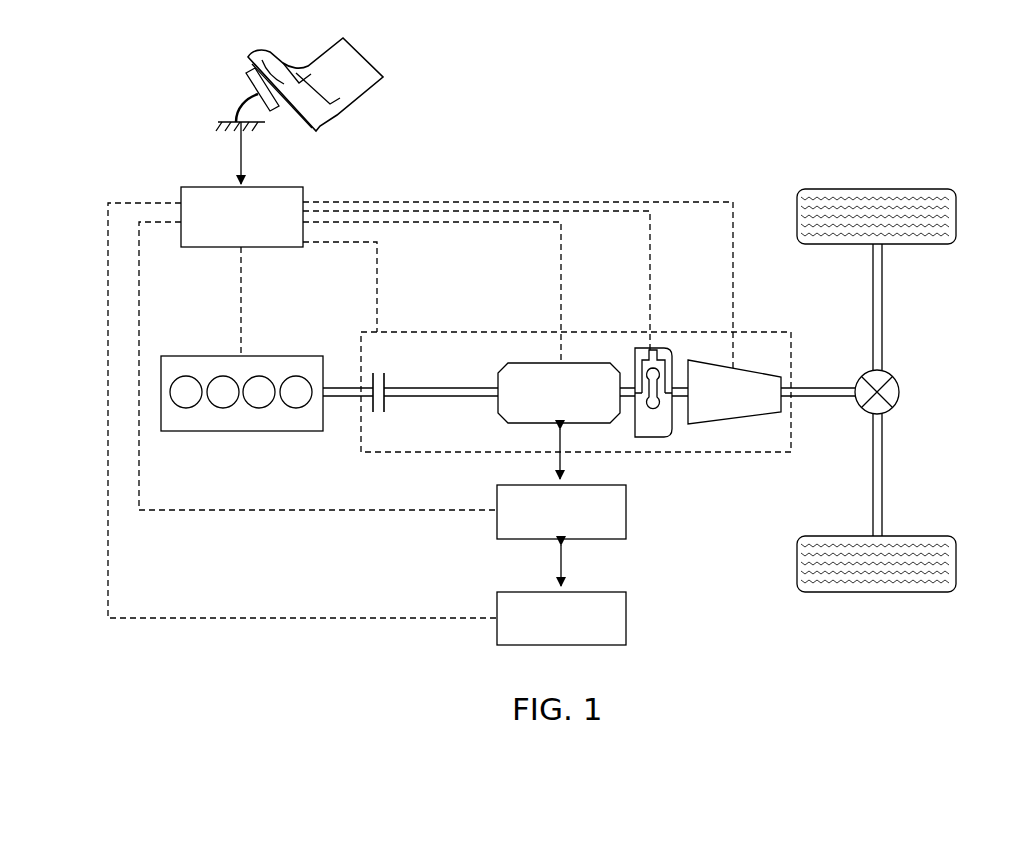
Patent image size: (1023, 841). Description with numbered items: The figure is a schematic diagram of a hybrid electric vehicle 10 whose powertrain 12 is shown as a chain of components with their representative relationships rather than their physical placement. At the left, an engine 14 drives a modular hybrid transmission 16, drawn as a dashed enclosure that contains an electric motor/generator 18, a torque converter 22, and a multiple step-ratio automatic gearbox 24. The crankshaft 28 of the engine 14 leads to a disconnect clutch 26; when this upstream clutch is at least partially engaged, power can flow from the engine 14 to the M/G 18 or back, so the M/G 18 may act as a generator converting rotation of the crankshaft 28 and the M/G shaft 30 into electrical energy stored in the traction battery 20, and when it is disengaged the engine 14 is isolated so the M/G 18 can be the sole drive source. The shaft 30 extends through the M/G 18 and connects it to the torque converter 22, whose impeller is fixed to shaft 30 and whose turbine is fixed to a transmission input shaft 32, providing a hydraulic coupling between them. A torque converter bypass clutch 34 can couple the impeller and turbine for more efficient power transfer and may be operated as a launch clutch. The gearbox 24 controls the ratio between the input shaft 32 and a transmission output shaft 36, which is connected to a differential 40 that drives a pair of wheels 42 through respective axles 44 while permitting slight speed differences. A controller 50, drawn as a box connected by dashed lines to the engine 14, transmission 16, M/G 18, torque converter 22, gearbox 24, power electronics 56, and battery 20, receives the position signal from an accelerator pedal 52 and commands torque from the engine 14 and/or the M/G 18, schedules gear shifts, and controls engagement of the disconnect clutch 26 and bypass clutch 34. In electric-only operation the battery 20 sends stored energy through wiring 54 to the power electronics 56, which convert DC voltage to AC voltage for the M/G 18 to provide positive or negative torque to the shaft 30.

The hybrid electric vehicle 10 is at (652, 120).
The powertrain 12 is at (289, 546).
The engine 14 is at (205, 355).
The transmission 16 is at (615, 331).
The motor/generator 18 is at (535, 364).
The traction battery 20 is at (627, 617).
The torque converter 22 is at (652, 437).
The gearbox 24 is at (733, 422).
The disconnect clutch 26 is at (386, 376).
The crankshaft 28 is at (350, 387).
The M/G shaft 30 is at (465, 387).
The transmission input shaft 32 is at (679, 387).
The torque converter bypass clutch 34 is at (652, 349).
The transmission output shaft 36 is at (810, 387).
The differential 40 is at (900, 393).
The wheels 42 is at (878, 188).
The axles 44 is at (883, 310).
The controller 50 is at (208, 186).
The accelerator pedal 52 is at (250, 88).
The wiring 54 is at (564, 570).
The power electronics 56 is at (627, 512).